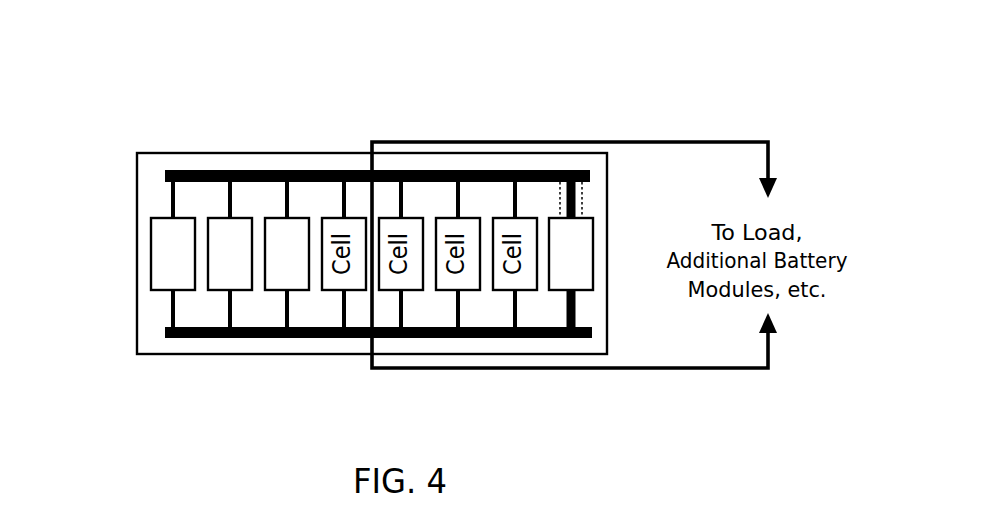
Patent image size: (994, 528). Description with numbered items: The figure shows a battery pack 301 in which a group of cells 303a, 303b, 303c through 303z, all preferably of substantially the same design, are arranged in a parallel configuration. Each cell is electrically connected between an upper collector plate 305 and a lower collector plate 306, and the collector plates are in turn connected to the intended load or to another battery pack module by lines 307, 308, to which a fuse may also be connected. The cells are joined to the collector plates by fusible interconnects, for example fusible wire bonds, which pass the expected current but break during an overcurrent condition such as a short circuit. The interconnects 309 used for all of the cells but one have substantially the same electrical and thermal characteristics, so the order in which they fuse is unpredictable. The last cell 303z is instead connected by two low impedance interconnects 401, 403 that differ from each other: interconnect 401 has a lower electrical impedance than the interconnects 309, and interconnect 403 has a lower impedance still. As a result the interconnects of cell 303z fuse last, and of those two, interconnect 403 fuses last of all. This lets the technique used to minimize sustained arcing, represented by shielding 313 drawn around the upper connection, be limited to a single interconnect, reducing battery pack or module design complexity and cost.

The battery pack 301 is at (125, 178).
The cell 303a is at (158, 290).
The cell 303b is at (217, 290).
The cell 303c is at (275, 290).
The cell 303z is at (593, 240).
The collector plate 305 is at (222, 170).
The collector plate 306 is at (223, 338).
The line 307 is at (668, 140).
The line 308 is at (670, 370).
The interconnects 309 is at (397, 196).
The shielding 313 is at (560, 190).
The interconnect 401 is at (567, 310).
The interconnect 403 is at (565, 207).